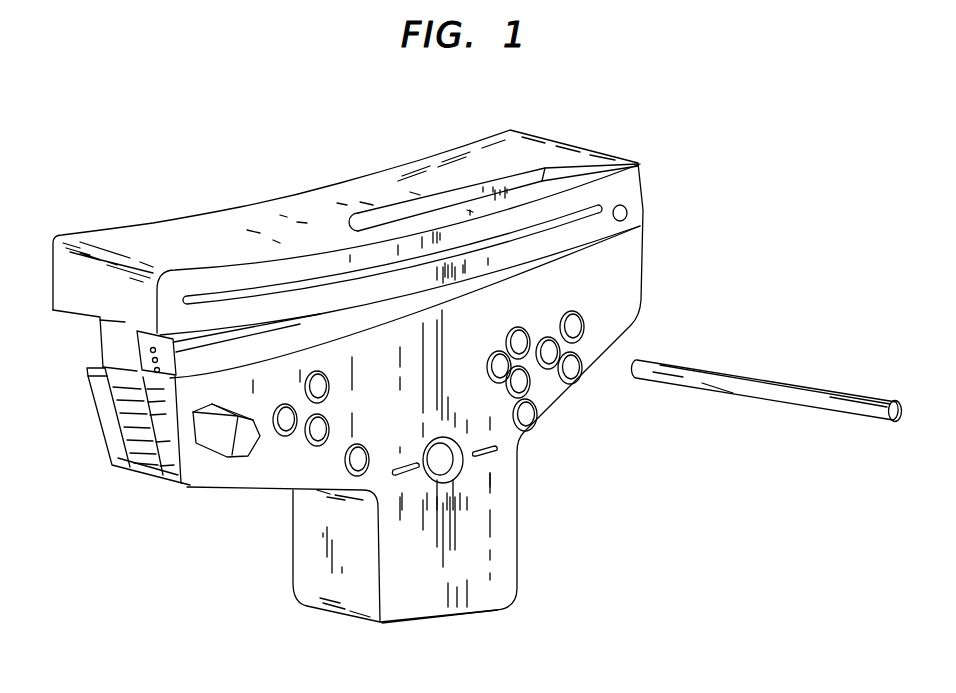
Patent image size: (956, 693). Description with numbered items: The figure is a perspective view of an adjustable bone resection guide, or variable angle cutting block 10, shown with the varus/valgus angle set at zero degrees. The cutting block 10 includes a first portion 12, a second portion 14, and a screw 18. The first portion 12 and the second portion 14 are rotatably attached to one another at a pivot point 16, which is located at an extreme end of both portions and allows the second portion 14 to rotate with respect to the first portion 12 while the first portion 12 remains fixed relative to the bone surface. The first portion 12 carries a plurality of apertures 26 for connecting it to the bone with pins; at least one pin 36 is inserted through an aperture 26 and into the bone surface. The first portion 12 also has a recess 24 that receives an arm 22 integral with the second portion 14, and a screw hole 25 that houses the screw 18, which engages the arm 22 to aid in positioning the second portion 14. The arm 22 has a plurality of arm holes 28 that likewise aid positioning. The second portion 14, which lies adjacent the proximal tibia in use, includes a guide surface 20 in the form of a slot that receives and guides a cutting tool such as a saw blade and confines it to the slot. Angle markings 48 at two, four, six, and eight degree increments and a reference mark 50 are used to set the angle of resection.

The adjustable bone resection guide 10 is at (214, 124).
The first portion 12 is at (478, 598).
The second portion 14 is at (505, 150).
The pivot point 16 is at (630, 213).
The screw 18 is at (228, 455).
The guide surface 20 is at (211, 297).
The arm 22 is at (113, 343).
The recess 24 is at (110, 395).
The screw hole 25 is at (195, 434).
The apertures 26 is at (572, 330).
The arm holes 28 is at (153, 373).
The pin 36 is at (765, 385).
The angle markings 48 is at (113, 433).
The reference mark 50 is at (113, 405).